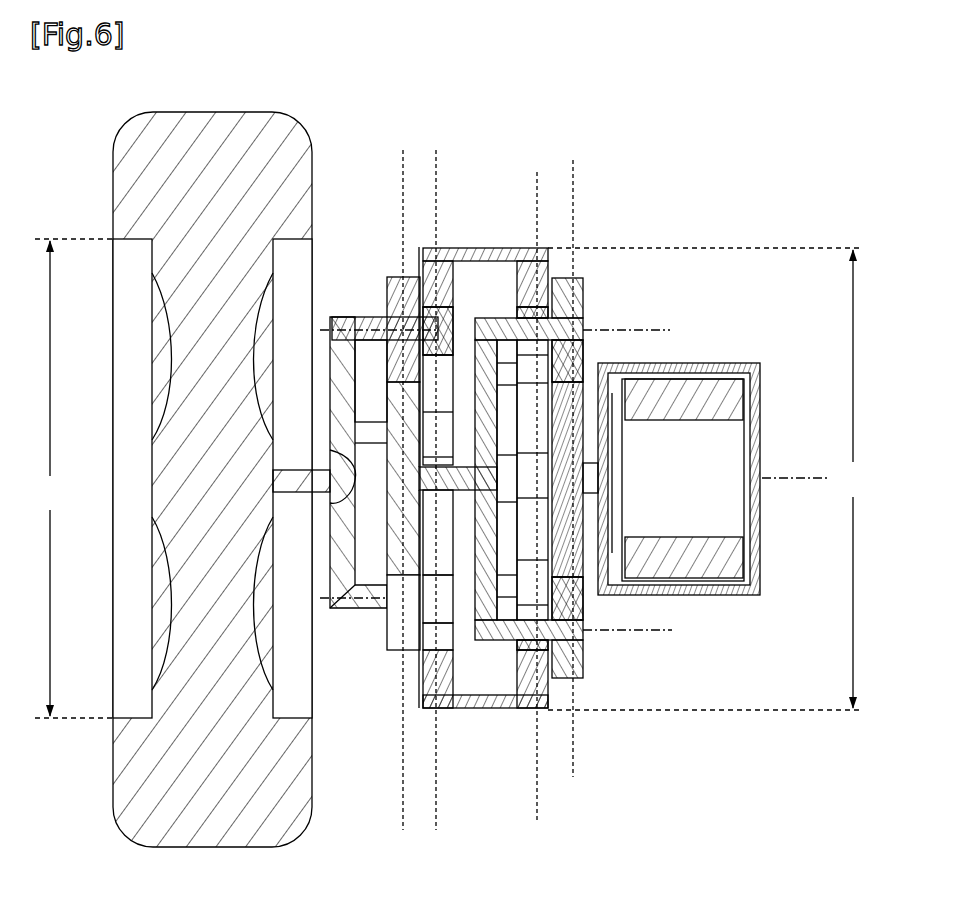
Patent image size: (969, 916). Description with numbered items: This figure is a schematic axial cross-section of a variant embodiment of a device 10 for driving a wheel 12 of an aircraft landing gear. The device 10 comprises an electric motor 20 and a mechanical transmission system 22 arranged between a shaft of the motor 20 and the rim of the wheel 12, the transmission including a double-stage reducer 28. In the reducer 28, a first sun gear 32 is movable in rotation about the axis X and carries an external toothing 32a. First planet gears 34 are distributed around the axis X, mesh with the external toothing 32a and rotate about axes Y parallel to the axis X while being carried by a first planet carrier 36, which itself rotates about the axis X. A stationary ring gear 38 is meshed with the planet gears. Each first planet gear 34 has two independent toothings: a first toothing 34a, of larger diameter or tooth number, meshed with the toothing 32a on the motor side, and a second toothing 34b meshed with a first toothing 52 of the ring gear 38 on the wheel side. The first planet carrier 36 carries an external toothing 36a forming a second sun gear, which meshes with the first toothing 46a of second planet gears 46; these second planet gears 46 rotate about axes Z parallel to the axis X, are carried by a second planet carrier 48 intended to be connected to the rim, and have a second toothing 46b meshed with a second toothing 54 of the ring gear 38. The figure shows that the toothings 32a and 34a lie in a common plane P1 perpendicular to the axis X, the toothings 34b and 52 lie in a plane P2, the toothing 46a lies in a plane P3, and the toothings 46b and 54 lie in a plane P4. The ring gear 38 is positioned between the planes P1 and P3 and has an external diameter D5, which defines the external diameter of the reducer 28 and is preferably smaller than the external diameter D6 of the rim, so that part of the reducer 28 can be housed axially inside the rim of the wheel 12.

The device for driving a wheel 10 is at (785, 113).
The wheel 12 is at (296, 850).
The electric motor 20 is at (762, 605).
The mechanical transmission system 22 is at (653, 857).
The reducer 28 is at (562, 240).
The first sun gear 32 is at (590, 423).
The external toothing 32a is at (583, 553).
The first planet gears 34 is at (597, 279).
The first toothing 34a is at (583, 663).
The second toothing 34b is at (531, 640).
The first planet carrier 36 is at (580, 329).
The external toothing 36a is at (395, 660).
The stationary ring gear 38 is at (480, 247).
The second planet gears 46 is at (416, 652).
The first toothing 46a is at (395, 270).
The second toothing 46b is at (428, 305).
The second planet carrier 48 is at (337, 622).
The first toothing of the ring gear 52 is at (517, 648).
The second toothing of the ring gear 54 is at (437, 710).
The plane P1 is at (574, 183).
The plane P2 is at (538, 183).
The plane P3 is at (404, 168).
The plane P4 is at (438, 177).
The axis of rotation X is at (795, 476).
The axes of rotation of the first planet gears Y is at (670, 330).
The axes of rotation of the second planet gears Z is at (336, 395).
The external diameter of the ring gear D5 is at (709, 479).
The external diameter of the rim D6 is at (75, 478).